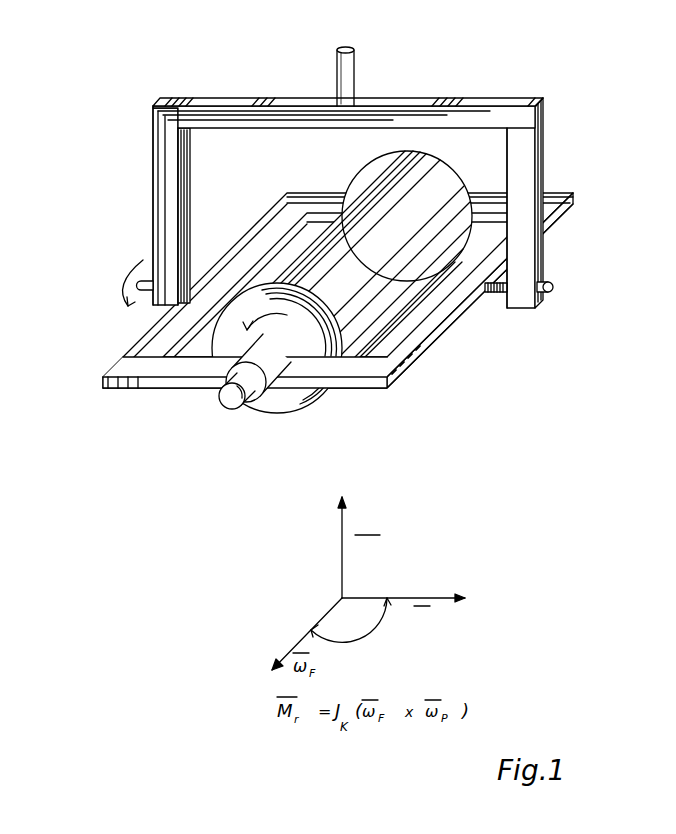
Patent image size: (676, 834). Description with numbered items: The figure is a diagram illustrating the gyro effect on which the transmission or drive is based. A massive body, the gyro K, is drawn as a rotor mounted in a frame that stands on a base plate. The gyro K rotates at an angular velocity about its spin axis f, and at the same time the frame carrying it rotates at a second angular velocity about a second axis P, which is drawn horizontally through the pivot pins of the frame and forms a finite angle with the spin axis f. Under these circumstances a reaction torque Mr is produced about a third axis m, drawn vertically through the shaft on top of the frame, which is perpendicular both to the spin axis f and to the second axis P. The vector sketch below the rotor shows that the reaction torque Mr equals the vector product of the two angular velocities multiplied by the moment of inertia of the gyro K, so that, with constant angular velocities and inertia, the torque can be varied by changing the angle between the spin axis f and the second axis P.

The gyro K is at (372, 271).
The third axis m— m is at (346, 398).
The spin axis f— f is at (190, 438).
The second axis p—p P is at (600, 286).
The reaction torque Mr is at (359, 547).